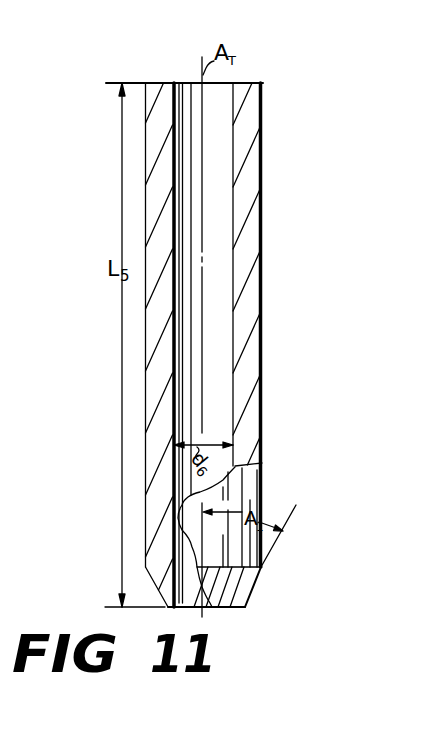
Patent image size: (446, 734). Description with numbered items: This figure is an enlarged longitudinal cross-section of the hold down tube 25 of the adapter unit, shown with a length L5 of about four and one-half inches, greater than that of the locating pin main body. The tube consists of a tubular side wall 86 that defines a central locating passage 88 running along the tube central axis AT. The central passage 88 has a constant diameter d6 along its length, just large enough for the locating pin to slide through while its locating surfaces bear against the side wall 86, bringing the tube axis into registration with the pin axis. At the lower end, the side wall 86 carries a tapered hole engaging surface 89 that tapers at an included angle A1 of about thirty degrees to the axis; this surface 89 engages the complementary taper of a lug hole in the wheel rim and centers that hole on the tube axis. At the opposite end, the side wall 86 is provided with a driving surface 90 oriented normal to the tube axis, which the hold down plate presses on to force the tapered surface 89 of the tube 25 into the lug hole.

The hold down tube 25 is at (143, 79).
The driving surface 90 is at (243, 83).
The tubular side wall 86 is at (257, 277).
The central locating passage 88 is at (228, 348).
The tapered hole engaging surface 89 is at (240, 591).